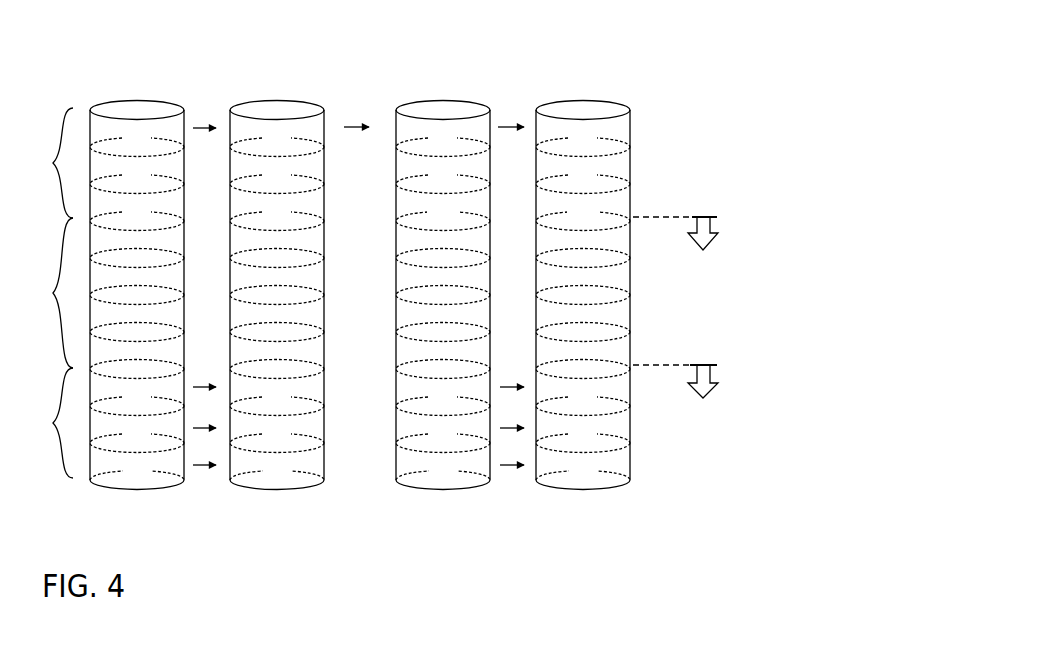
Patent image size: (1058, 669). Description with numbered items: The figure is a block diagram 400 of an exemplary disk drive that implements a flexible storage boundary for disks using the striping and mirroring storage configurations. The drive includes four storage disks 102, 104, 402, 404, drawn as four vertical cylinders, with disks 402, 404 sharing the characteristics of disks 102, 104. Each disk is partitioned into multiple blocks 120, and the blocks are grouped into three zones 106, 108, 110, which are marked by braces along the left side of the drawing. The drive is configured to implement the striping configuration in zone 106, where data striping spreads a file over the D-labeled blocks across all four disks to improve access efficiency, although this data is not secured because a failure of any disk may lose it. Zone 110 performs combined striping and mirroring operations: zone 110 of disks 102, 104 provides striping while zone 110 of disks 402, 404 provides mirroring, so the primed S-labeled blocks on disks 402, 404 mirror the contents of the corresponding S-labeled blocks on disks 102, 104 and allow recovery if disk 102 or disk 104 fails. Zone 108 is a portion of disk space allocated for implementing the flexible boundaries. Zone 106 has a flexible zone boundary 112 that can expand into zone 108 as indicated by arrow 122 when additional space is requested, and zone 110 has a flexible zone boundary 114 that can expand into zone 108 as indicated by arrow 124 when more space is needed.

The block diagram 400 is at (840, 90).
The storage disk 102 is at (137, 86).
The storage disk 104 is at (278, 81).
The storage disk 402 is at (453, 79).
The storage disk 404 is at (594, 77).
The block 120 is at (239, 121).
The zone 1 106 is at (47, 163).
The zone 3 108 is at (47, 293).
The zone 2 110 is at (47, 423).
The flexible zone boundary 112 is at (663, 216).
The flexible zone boundary 114 is at (691, 363).
The arrow 122 is at (708, 248).
The arrow 124 is at (710, 393).